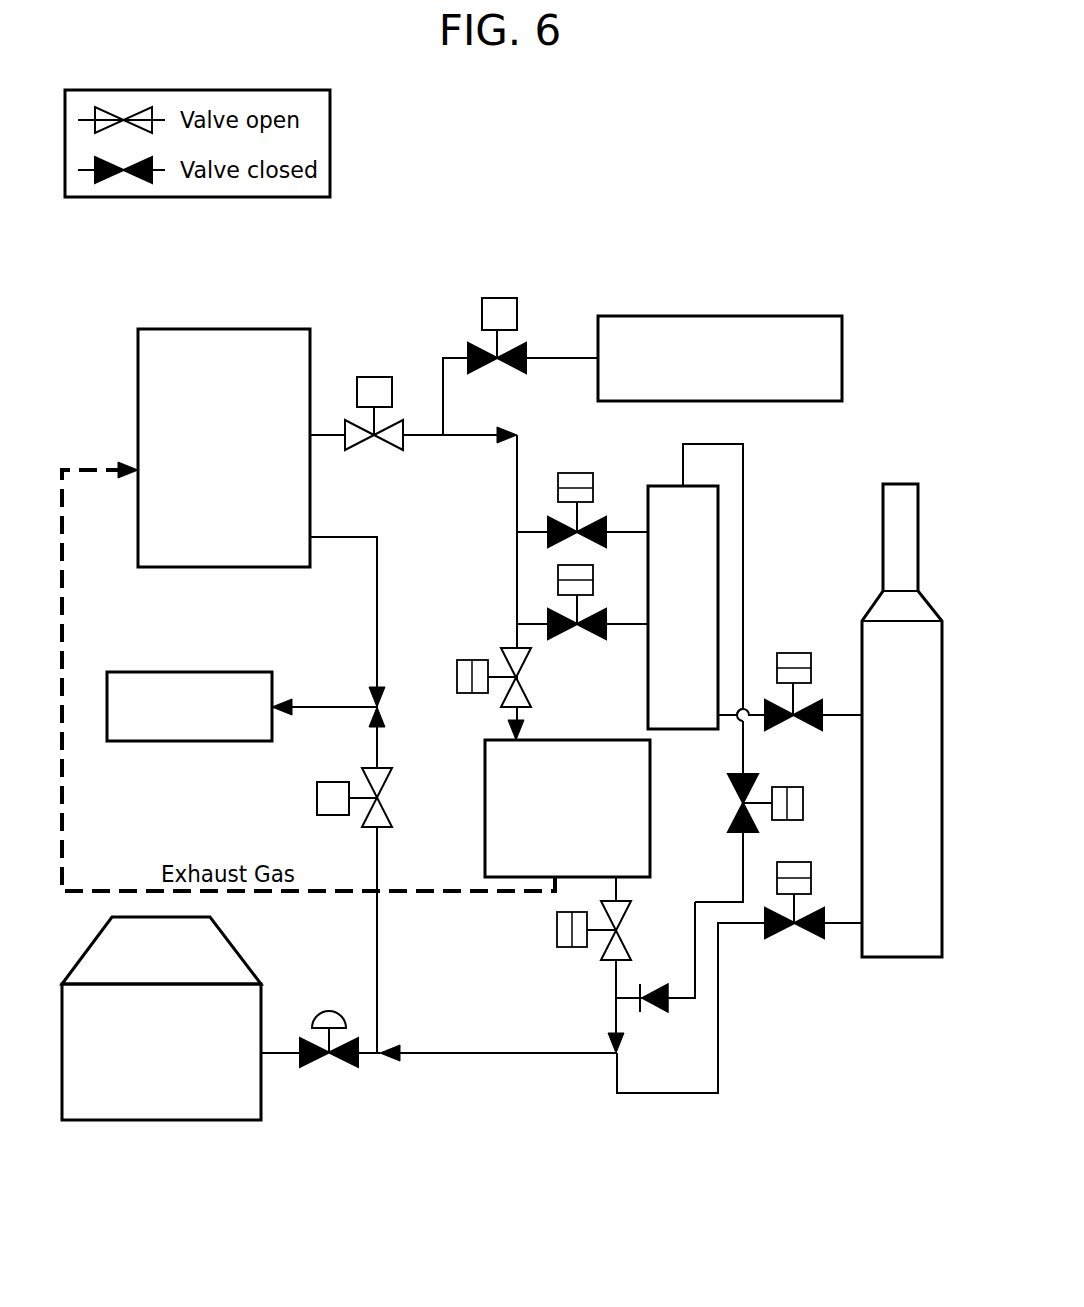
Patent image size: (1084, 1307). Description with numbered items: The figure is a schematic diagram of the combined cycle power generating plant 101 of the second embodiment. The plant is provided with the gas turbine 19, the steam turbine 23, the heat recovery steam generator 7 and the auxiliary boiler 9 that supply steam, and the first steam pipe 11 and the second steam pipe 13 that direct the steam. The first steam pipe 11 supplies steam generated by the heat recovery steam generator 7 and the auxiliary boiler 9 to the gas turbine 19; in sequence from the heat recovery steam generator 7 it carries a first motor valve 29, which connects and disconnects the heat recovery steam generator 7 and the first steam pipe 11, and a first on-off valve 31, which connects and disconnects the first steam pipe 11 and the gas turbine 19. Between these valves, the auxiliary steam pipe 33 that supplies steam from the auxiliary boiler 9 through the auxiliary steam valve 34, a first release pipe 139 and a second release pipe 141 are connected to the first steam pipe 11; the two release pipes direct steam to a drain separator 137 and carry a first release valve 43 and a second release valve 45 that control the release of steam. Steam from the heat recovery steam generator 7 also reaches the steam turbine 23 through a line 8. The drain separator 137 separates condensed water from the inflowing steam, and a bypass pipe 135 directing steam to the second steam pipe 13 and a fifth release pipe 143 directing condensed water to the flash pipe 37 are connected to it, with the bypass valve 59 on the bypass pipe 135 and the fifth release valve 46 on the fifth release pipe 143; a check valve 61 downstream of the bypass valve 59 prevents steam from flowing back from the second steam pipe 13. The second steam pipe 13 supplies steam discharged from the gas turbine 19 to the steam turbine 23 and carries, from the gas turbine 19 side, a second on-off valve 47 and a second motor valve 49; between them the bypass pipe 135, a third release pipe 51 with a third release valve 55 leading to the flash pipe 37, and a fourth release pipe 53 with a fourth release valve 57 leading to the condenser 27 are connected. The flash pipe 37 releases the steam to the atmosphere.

The combined cycle power generating plant 101 is at (846, 160).
The heat recovery steam generator 7 is at (218, 329).
The main steam line 8 is at (377, 606).
The auxiliary boiler 9 is at (717, 316).
The first steam pipe 11 is at (492, 433).
The second steam pipe 13 is at (475, 1053).
The gas turbine 19 is at (485, 850).
The steam turbine 23 is at (150, 672).
The condenser 27 is at (147, 1120).
The first motor valve 29 is at (370, 377).
The first on-off valve 31 is at (462, 693).
The auxiliary steam pipe 33 is at (558, 357).
The auxiliary steam valve 34 is at (496, 298).
The flash pipe 37 is at (912, 957).
The first release valve 43 is at (577, 473).
The second release valve 45 is at (593, 578).
The fifth release valve 46 is at (790, 653).
The second on-off valve 47 is at (557, 928).
The second motor valve 49 is at (317, 797).
The third release pipe 51 is at (655, 1093).
The fourth release pipe 53 is at (285, 1056).
The third release valve 55 is at (784, 938).
The fourth release valve 57 is at (329, 1012).
The bypass valve 59 is at (740, 812).
The check valve 61 is at (660, 1010).
The bypass pipe 135 is at (745, 466).
The drain separator 137 is at (648, 707).
The first release pipe 139 is at (533, 531).
The second release pipe 141 is at (535, 625).
The fifth release pipe 143 is at (840, 714).